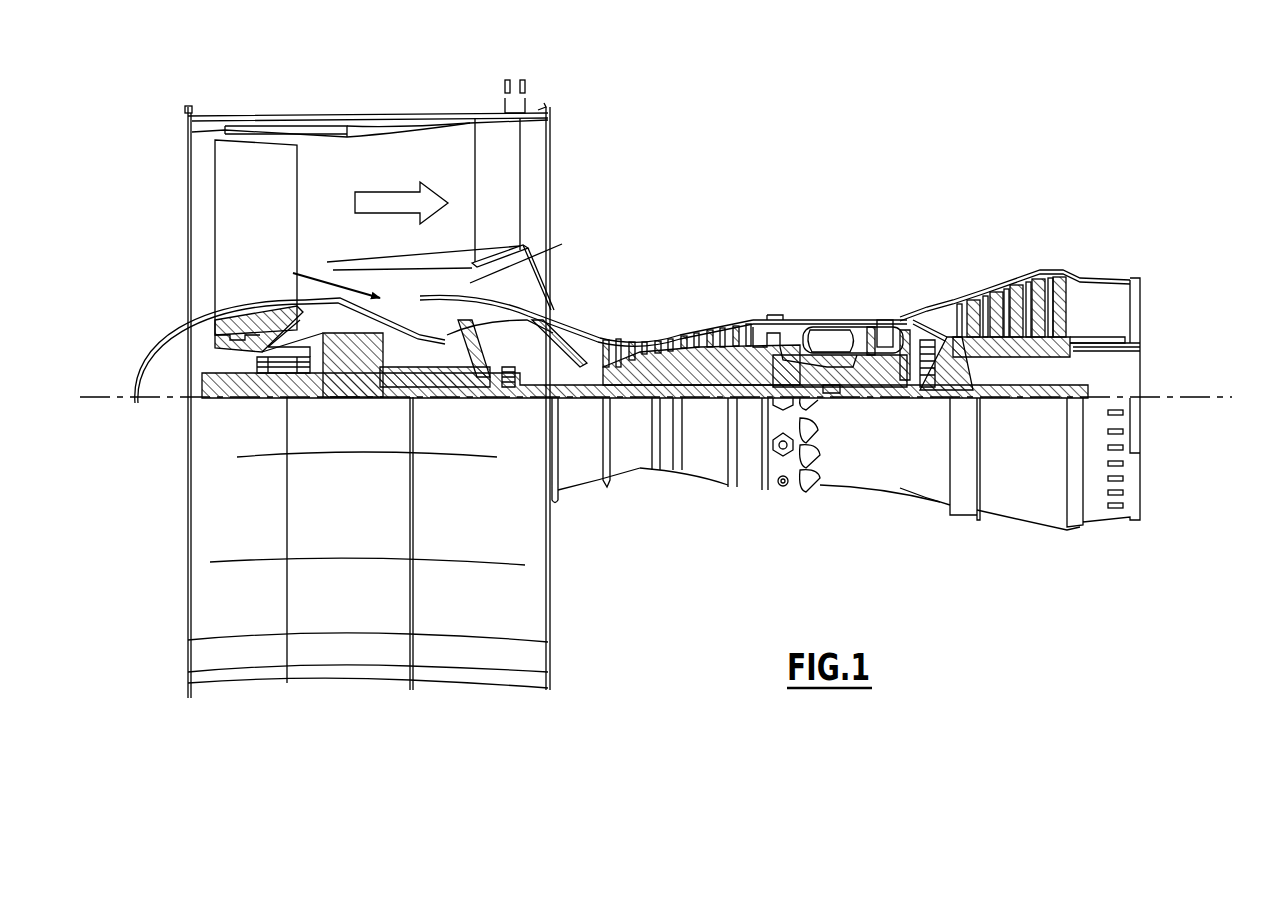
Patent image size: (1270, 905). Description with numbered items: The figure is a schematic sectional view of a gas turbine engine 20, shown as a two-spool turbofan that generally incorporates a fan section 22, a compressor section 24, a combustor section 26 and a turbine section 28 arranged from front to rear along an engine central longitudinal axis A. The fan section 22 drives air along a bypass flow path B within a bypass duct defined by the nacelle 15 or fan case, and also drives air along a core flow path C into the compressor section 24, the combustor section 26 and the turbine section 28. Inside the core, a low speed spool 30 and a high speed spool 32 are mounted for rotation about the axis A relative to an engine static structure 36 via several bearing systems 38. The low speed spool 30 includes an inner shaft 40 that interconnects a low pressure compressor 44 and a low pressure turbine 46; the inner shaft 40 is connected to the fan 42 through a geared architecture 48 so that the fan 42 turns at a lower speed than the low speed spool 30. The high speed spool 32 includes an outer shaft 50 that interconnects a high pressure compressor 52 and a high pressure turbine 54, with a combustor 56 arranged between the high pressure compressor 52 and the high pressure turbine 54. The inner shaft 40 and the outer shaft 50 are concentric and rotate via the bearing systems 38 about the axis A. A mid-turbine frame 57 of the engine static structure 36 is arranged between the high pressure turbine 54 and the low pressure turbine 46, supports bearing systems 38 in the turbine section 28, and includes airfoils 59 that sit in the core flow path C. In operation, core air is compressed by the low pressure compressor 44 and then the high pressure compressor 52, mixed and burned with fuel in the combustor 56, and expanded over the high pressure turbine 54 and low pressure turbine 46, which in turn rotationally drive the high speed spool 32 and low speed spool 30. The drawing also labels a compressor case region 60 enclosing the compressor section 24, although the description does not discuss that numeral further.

The nacelle 15 is at (333, 118).
The gas turbine engine 20 is at (842, 157).
The fan section 22 is at (300, 100).
The compressor section 24 is at (701, 322).
The combustor section 26 is at (840, 311).
The turbine section 28 is at (1020, 299).
The low speed spool 30 is at (707, 404).
The high speed spool 32 is at (752, 320).
The engine static structure 36 is at (747, 497).
The bearing systems 38 is at (507, 383).
The inner shaft 40 is at (565, 398).
The fan 42 is at (272, 244).
The low pressure compressor 44 is at (500, 262).
The low pressure turbine 46 is at (1015, 290).
The geared architecture 48 is at (378, 380).
The outer shaft 50 is at (837, 392).
The high pressure compressor 52 is at (677, 333).
The high pressure turbine 54 is at (885, 320).
The combustor 56 is at (823, 335).
The mid-turbine frame 57 is at (932, 313).
The airfoils 59 is at (930, 333).
The compressor case 60 is at (572, 308).
The engine central longitudinal axis A is at (1222, 397).
The bypass flow path B is at (398, 190).
The core flow path C is at (320, 300).